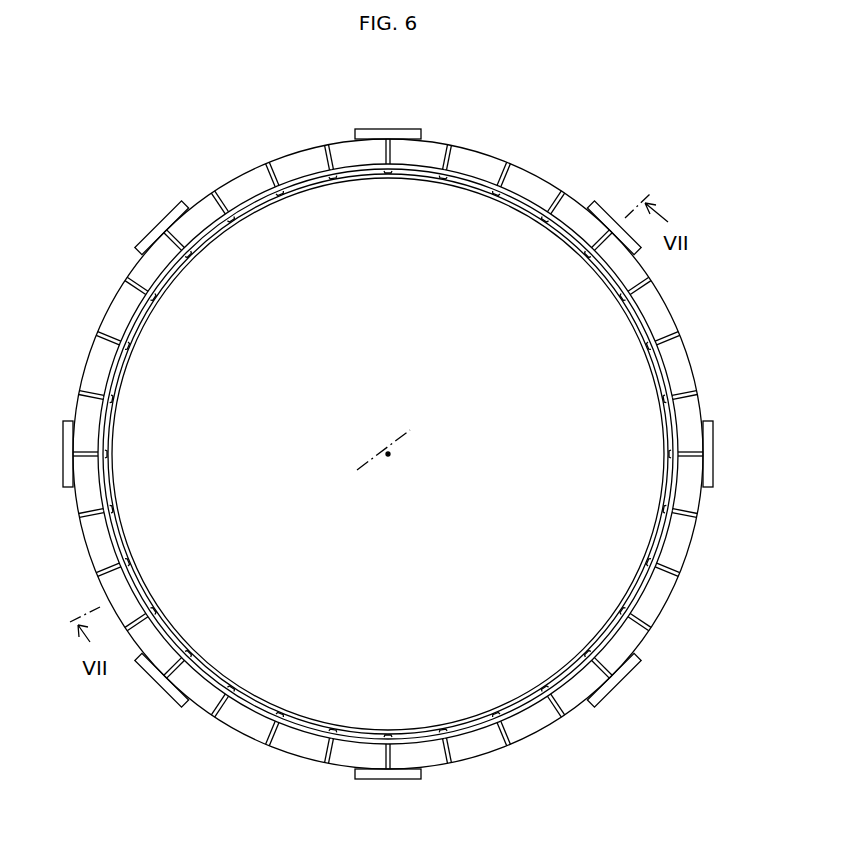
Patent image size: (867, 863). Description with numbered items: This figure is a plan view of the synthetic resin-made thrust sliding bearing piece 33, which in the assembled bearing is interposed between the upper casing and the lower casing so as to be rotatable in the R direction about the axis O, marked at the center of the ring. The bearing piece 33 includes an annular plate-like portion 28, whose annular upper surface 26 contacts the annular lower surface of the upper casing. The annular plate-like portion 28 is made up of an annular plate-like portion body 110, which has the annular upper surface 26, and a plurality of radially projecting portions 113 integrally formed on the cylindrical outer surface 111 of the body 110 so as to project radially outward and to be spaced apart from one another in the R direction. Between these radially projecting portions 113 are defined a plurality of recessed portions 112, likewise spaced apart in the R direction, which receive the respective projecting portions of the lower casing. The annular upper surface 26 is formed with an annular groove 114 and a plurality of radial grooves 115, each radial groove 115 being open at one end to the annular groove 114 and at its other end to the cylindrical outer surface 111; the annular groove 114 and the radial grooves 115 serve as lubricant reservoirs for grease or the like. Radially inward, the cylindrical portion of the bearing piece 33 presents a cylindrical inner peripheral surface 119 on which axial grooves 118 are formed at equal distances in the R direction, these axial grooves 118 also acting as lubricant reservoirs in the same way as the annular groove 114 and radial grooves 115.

The thrust sliding bearing piece 33 is at (409, 470).
The cylindrical outer surface 111 is at (702, 391).
The radially projecting portions 113 is at (101, 252).
The recessed portions 112 is at (509, 162).
The radial grooves 115 is at (392, 150).
The annular plate-like portion body 110 is at (652, 306).
The annular plate-like portion 28 is at (230, 715).
The axial grooves 118 is at (285, 198).
The annular upper surface 26 is at (547, 198).
The annular groove 114 is at (668, 498).
The cylindrical inner peripheral surface 119 is at (222, 665).
The axis O is at (389, 457).